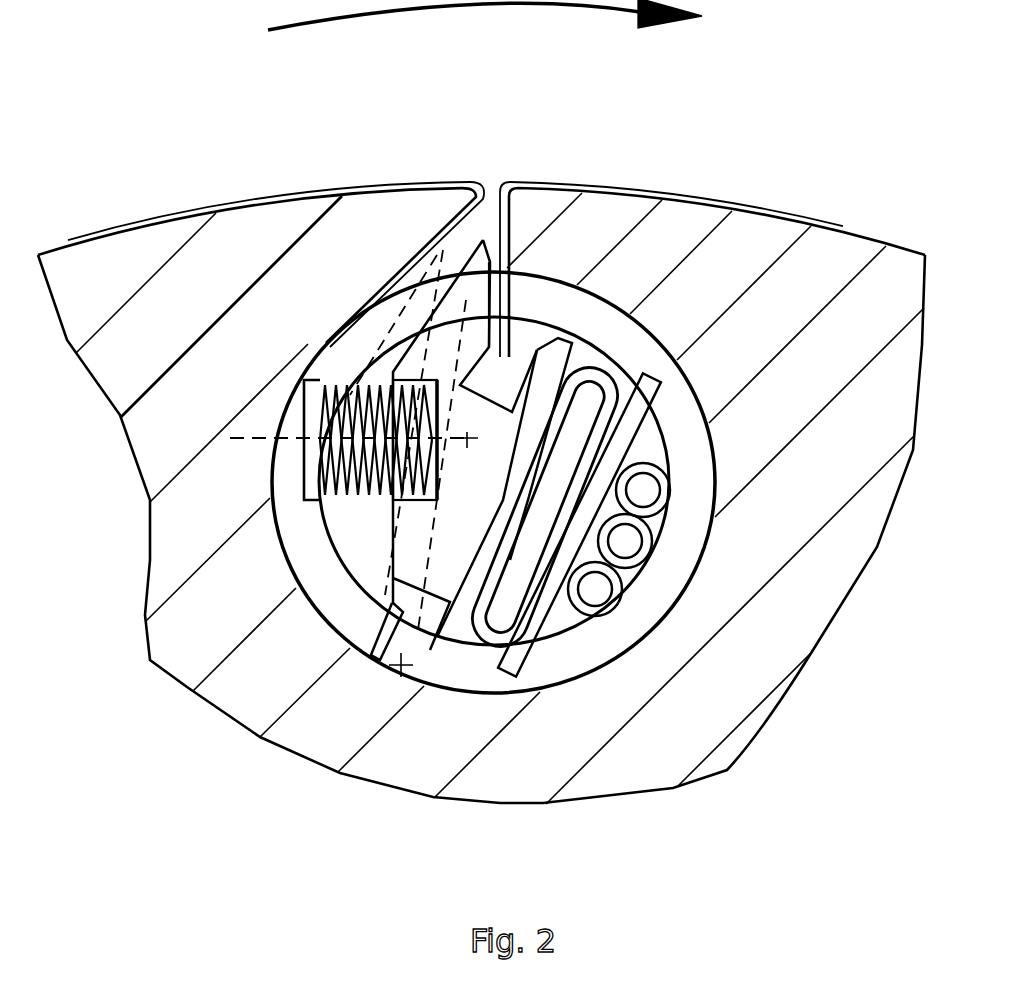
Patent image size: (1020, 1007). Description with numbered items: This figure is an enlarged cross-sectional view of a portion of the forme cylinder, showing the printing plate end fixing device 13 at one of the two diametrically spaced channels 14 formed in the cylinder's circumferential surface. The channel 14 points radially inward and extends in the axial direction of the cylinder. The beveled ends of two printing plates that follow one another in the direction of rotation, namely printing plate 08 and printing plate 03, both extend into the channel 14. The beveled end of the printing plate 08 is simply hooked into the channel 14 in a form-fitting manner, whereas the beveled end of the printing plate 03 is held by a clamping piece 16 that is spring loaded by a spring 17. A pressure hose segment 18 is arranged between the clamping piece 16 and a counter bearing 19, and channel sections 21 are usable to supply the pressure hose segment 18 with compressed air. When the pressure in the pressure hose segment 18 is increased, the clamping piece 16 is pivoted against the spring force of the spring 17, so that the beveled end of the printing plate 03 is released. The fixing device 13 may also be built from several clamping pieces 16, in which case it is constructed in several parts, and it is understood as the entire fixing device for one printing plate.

The printing plate 03 is at (690, 194).
The printing plate 08 is at (283, 196).
The printing plate end fixing device 13 is at (600, 112).
The channel 14 is at (488, 182).
The clamping piece 16 is at (503, 457).
The spring 17 is at (310, 486).
The pressure hose segment 18 is at (487, 645).
The counter bearing 19 is at (655, 378).
The channel section 21 is at (640, 541).